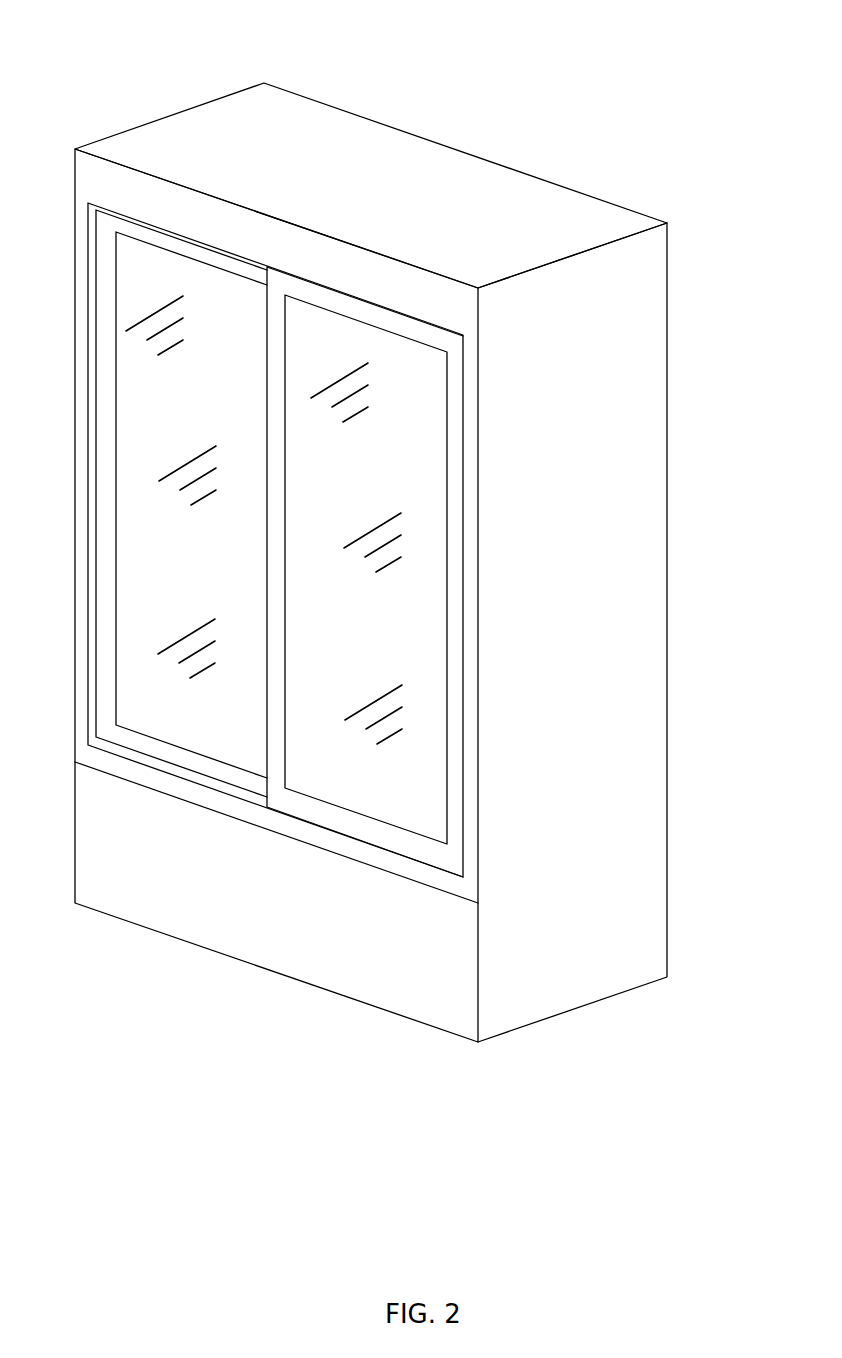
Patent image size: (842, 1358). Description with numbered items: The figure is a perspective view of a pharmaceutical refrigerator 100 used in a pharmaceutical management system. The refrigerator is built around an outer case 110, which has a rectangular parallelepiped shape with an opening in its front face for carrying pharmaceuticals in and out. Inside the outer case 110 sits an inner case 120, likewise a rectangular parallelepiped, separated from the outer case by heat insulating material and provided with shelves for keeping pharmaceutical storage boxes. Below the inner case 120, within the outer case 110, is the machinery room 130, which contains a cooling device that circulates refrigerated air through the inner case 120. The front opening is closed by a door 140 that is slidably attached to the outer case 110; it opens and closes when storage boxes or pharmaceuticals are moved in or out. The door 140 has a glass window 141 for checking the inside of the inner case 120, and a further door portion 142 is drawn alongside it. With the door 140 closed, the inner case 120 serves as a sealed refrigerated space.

The pharmaceutical refrigerator 100 is at (412, 523).
The outer case 110 is at (647, 395).
The inner case 120 is at (589, 485).
The machinery room 130 is at (589, 951).
The door 140 is at (418, 540).
The glass window 141 is at (413, 660).
The second door 142 is at (413, 770).